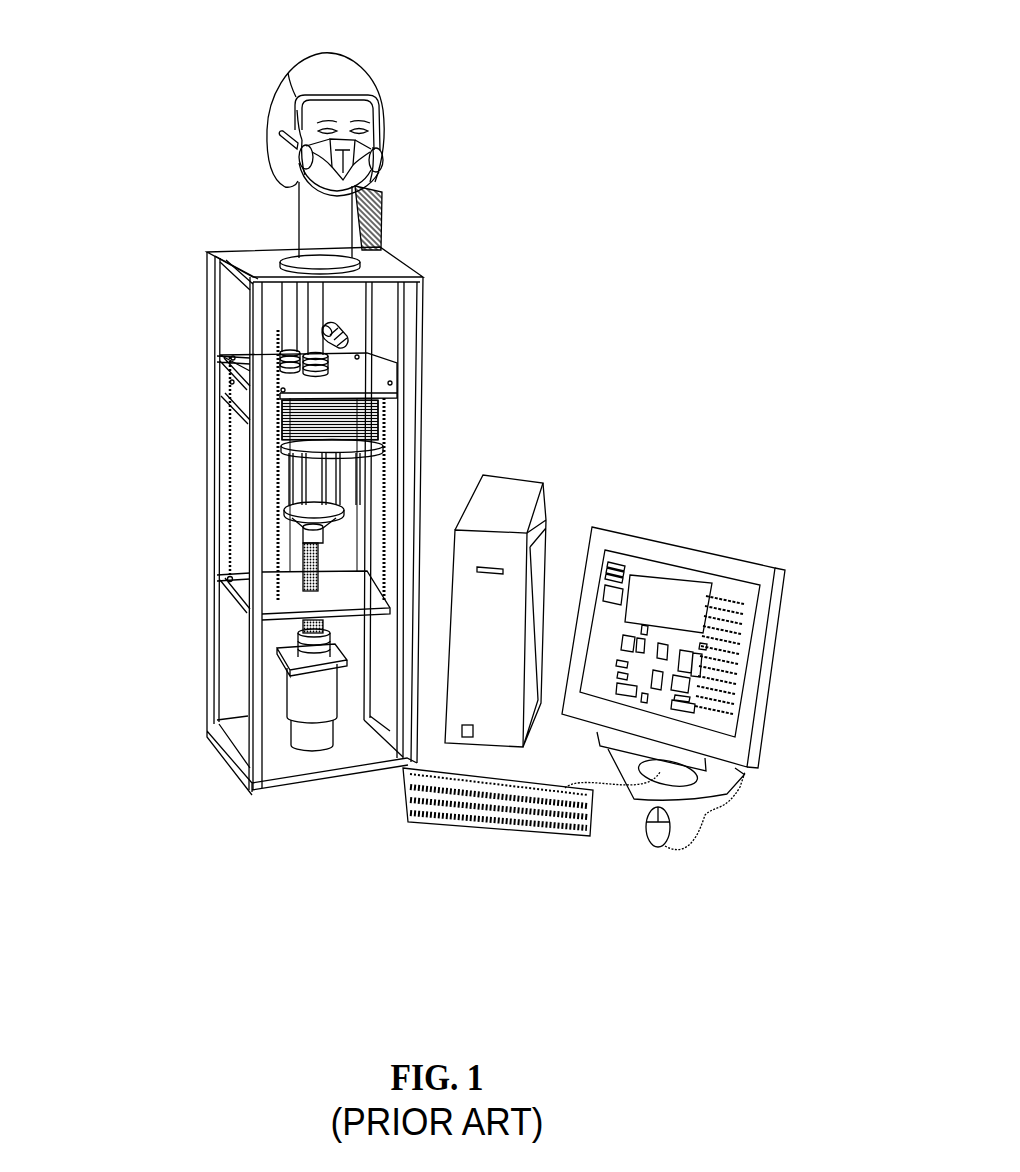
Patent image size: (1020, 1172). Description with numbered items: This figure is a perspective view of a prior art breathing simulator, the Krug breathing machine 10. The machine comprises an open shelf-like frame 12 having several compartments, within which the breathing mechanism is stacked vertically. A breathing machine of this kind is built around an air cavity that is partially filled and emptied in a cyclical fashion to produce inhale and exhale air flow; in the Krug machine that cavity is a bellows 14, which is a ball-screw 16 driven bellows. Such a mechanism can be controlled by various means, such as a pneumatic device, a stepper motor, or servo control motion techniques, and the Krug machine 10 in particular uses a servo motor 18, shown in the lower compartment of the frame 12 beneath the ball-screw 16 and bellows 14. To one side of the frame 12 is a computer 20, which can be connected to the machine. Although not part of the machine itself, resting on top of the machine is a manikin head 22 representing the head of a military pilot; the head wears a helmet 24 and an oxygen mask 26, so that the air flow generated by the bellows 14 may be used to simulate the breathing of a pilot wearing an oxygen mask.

The Krug breathing machine 10 is at (518, 261).
The open shelf-like frame 12 is at (407, 357).
The bellows 14 is at (277, 418).
The ball-screw 16 is at (280, 533).
The servo motor 18 is at (305, 691).
The computer 20 is at (585, 468).
The manikin head 22 is at (338, 113).
The helmet 24 is at (342, 73).
The oxygen mask 26 is at (362, 165).